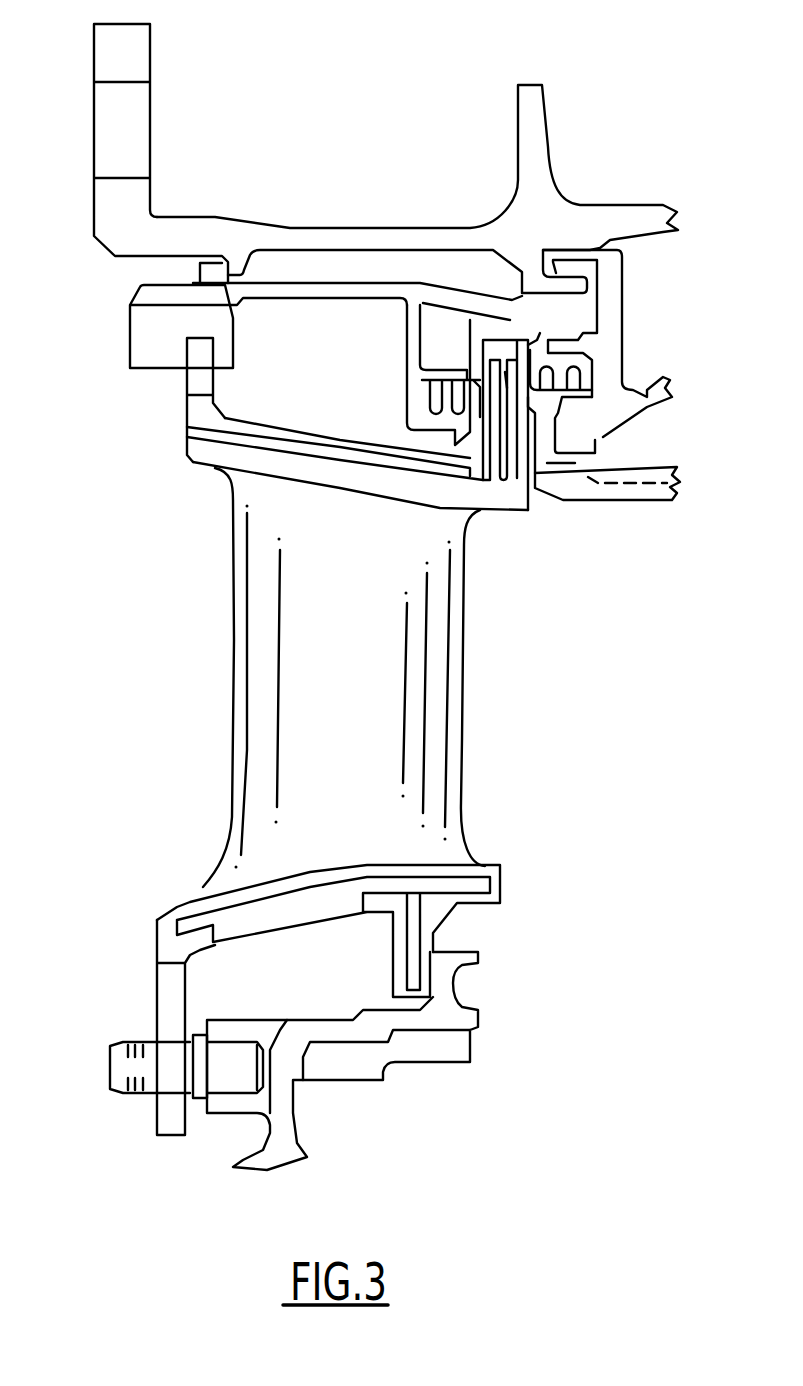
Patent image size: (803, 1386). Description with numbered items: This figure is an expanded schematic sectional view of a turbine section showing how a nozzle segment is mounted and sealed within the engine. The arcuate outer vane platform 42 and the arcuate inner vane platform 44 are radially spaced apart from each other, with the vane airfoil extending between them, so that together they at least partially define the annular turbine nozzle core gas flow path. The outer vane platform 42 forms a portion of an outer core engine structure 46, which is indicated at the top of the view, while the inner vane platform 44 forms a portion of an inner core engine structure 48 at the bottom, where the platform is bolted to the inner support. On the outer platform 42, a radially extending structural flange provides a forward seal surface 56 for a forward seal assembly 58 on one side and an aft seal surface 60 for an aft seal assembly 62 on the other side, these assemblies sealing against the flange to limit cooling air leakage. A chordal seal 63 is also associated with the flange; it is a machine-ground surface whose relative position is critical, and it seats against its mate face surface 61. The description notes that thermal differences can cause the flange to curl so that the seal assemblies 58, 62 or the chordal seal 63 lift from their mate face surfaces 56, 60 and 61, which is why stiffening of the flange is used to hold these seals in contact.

The arcuate outer vane platform 42 is at (203, 455).
The arcuate inner vane platform 44 is at (187, 903).
The outer core engine structure 46 is at (143, 383).
The inner core engine structure 48 is at (123, 982).
The forward seal surface 56 is at (483, 350).
The forward seal assembly 58 is at (393, 385).
The aft seal surface 60 is at (530, 352).
The mate face surface 61 is at (548, 428).
The aft seal assembly 62 is at (600, 362).
The chordal seal 63 is at (530, 415).